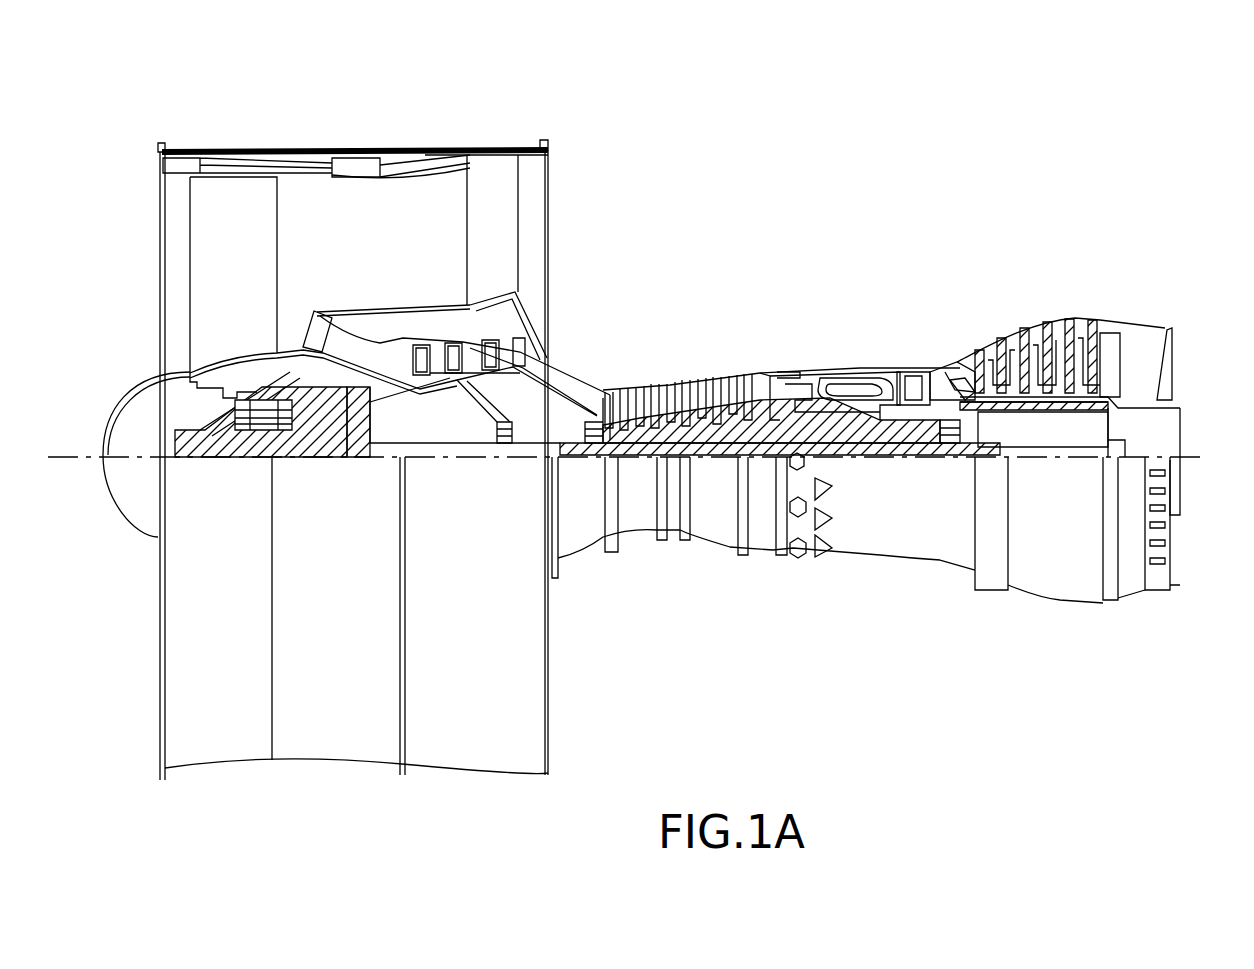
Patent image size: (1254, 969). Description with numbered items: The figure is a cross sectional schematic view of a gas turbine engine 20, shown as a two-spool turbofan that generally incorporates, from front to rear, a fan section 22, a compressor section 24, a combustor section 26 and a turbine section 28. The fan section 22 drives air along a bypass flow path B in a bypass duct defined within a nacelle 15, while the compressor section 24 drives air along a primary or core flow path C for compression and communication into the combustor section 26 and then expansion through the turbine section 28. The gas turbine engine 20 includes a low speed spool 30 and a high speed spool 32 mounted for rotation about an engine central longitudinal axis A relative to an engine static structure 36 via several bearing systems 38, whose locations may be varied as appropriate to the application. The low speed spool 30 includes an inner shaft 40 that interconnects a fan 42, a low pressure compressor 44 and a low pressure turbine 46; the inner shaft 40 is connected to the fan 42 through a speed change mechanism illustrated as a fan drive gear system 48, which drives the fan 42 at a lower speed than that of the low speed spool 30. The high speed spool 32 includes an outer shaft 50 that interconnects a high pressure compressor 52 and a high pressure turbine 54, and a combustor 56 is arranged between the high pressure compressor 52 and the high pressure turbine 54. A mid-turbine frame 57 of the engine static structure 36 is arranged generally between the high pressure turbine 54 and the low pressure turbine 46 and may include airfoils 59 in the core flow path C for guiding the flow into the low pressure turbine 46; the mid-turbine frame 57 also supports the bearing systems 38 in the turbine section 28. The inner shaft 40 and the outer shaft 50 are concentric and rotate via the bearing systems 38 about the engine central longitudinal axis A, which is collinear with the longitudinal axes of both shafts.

The gas turbine engine 20 is at (870, 158).
The fan section 22 is at (268, 135).
The compressor section 24 is at (598, 355).
The combustor section 26 is at (835, 333).
The turbine section 28 is at (997, 300).
The nacelle 15 is at (352, 162).
The low speed spool 30 is at (717, 458).
The high speed spool 32 is at (772, 410).
The engine static structure 36 is at (763, 528).
The bearing systems 38 is at (505, 458).
The inner shaft 40 is at (572, 458).
The fan 42 is at (244, 271).
The low pressure compressor 44 is at (485, 350).
The low pressure turbine 46 is at (1045, 347).
The fan drive gear system 48 is at (362, 457).
The outer shaft 50 is at (830, 438).
The high pressure compressor 52 is at (715, 385).
The high pressure turbine 54 is at (908, 370).
The combustor 56 is at (850, 394).
The mid-turbine frame 57 is at (950, 374).
The airfoils 59 is at (960, 386).
The engine central longitudinal axis A is at (1226, 452).
The bypass flow path B is at (312, 233).
The core flow path C is at (333, 332).